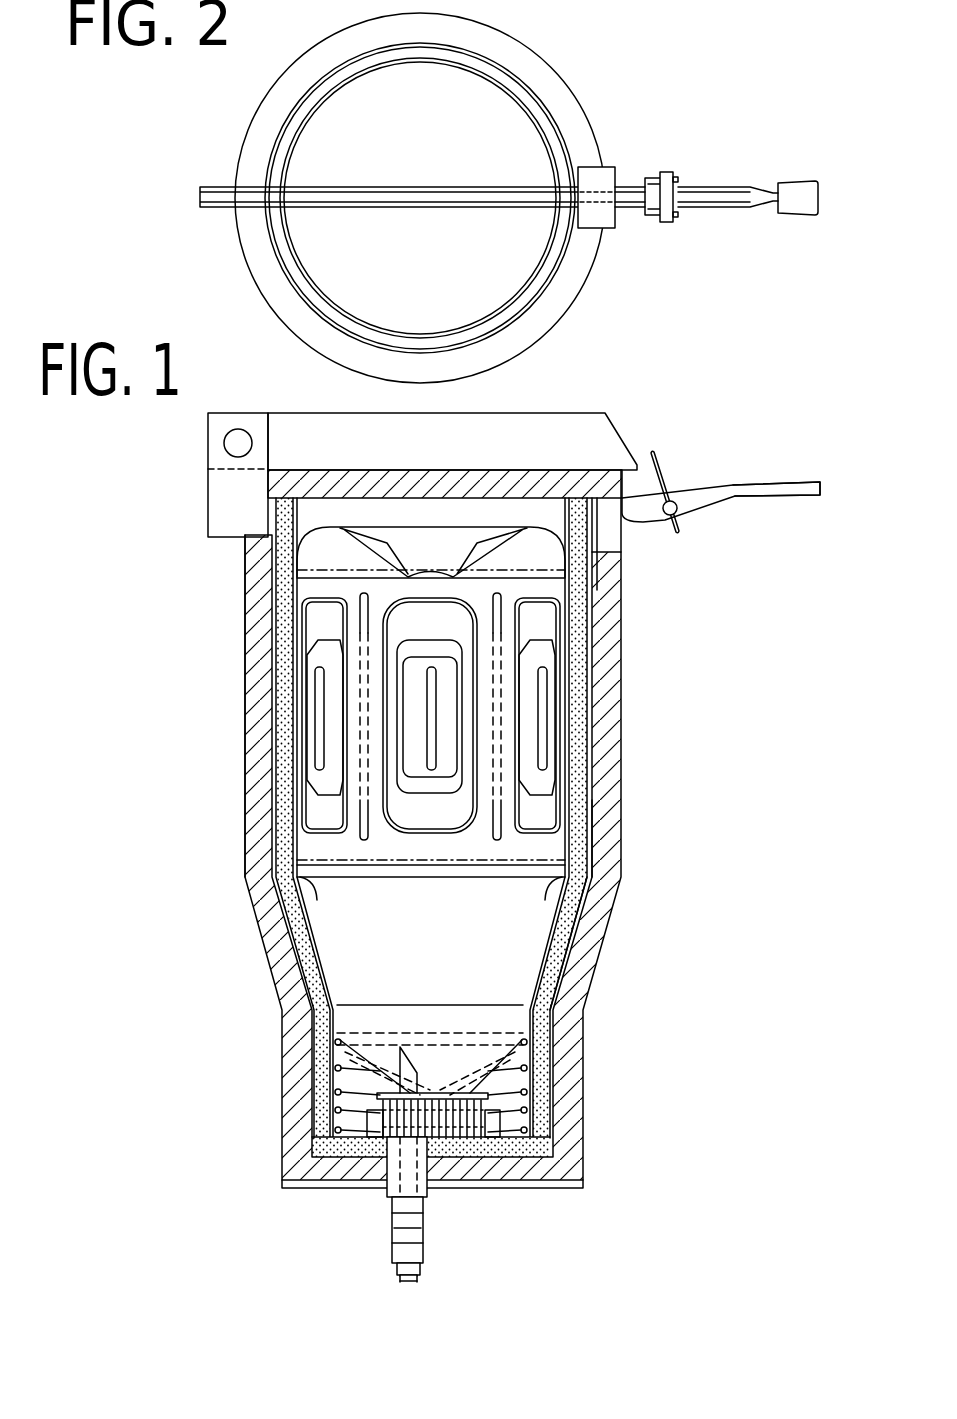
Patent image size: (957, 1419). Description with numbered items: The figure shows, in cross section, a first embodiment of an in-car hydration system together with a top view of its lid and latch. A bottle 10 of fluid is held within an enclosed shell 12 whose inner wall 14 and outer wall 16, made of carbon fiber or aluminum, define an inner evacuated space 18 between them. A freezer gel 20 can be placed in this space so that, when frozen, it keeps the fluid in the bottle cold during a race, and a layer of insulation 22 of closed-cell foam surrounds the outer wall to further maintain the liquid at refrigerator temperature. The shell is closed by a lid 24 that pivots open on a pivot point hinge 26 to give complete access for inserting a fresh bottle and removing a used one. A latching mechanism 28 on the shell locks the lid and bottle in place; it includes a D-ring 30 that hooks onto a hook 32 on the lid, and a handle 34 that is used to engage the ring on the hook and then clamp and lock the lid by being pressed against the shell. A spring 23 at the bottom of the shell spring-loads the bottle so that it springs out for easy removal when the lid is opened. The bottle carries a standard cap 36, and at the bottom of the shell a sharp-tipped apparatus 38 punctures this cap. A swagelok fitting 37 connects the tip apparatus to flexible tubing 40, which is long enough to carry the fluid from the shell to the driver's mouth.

In FIG. 1, the bottle 10 is at (556, 770).
In FIG. 1, the shell 12 is at (612, 917).
In FIG. 1, the inner wall 14 is at (553, 950).
In FIG. 1, the outer wall 16 is at (566, 967).
In FIG. 1, the inner evacuated space 18 is at (583, 845).
In FIG. 1, the freezer gel 20 is at (580, 800).
In FIG. 1, the layer of insulation 22 is at (246, 780).
In FIG. 1, the spring 23 is at (541, 1080).
In FIG. 2, the lid 24 is at (600, 119).
In FIG. 1, the lid 24 is at (578, 413).
In FIG. 2, the pivot point hinge 26 is at (212, 207).
In FIG. 1, the pivot point hinge 26 is at (224, 447).
In FIG. 2, the latching mechanism 28 is at (713, 208).
In FIG. 1, the latching mechanism 28 is at (775, 497).
In FIG. 2, the D-ring 30 is at (651, 212).
In FIG. 1, the D-ring 30 is at (662, 478).
In FIG. 2, the hook 32 is at (636, 186).
In FIG. 1, the hook 32 is at (634, 462).
In FIG. 2, the handle 34 is at (790, 214).
In FIG. 1, the handle 34 is at (803, 482).
In FIG. 1, the cap 36 is at (460, 1143).
In FIG. 1, the swagelok fitting 37 is at (391, 1214).
In FIG. 1, the sharp-tipped apparatus 38 is at (393, 1090).
In FIG. 1, the flexible tubing 40 is at (425, 1247).